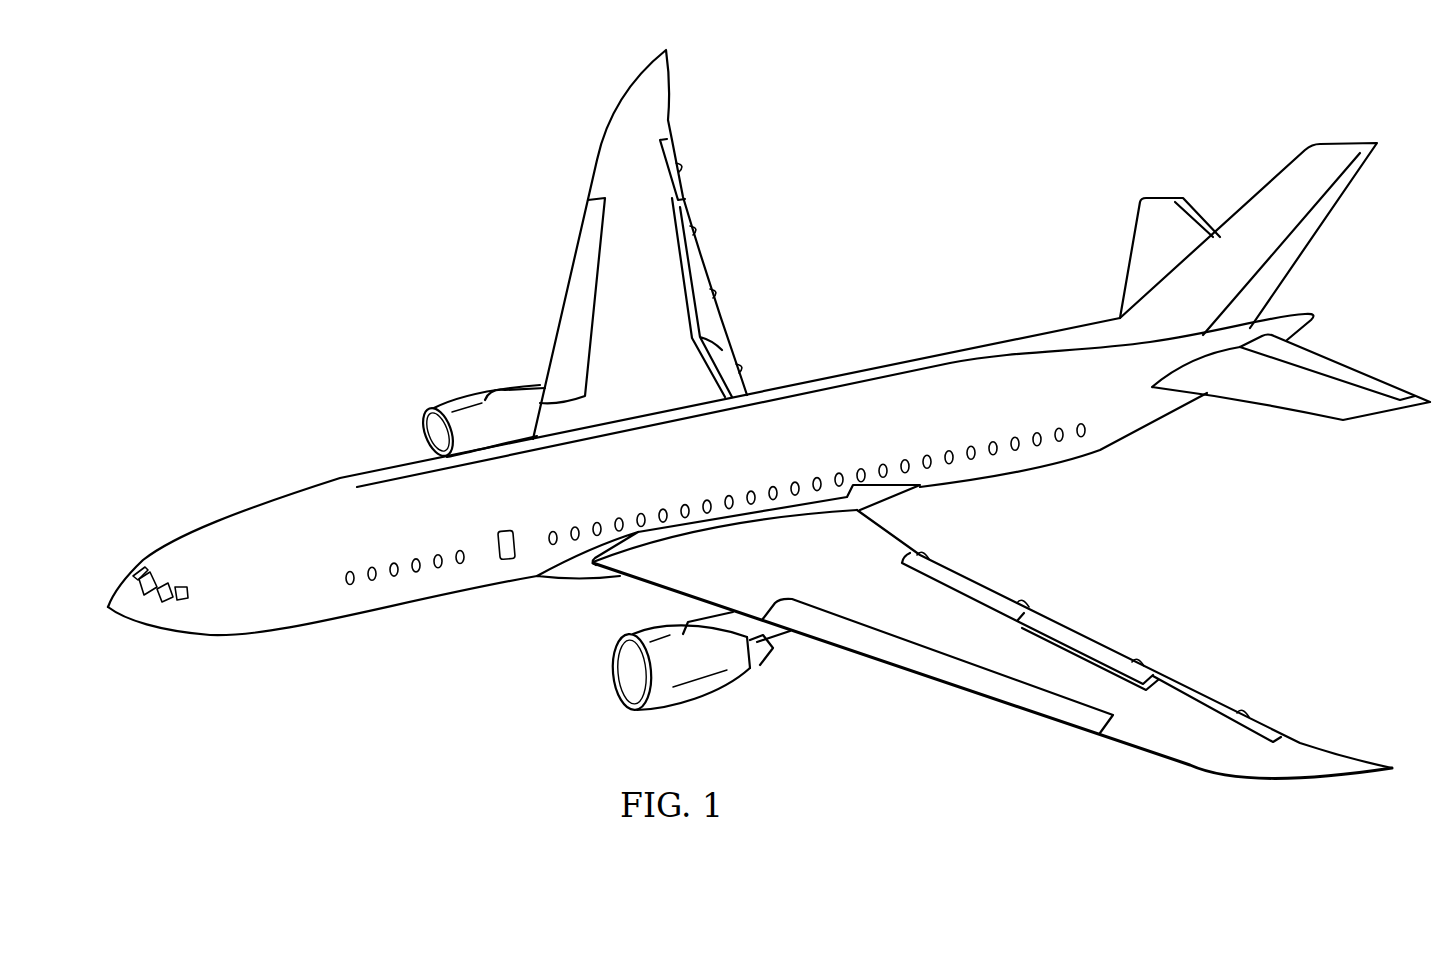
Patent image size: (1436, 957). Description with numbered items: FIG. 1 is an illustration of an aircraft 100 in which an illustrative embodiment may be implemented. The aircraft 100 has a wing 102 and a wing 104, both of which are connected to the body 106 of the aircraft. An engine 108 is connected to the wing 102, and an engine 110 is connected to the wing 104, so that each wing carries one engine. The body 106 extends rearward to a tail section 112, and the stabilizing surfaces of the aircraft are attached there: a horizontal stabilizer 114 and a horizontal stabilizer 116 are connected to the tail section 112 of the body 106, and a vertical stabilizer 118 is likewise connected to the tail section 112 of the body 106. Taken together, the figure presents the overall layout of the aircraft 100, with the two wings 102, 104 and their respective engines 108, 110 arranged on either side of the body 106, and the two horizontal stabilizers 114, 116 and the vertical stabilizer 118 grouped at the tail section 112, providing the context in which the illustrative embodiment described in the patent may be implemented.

The aircraft 100 is at (375, 195).
The wing 102 is at (657, 87).
The wing 104 is at (1240, 782).
The body 106 is at (285, 491).
The engine 108 is at (463, 384).
The engine 110 is at (700, 705).
The tail section 112 is at (1195, 455).
The horizontal stabilizer 114 is at (1128, 253).
The horizontal stabilizer 116 is at (1295, 413).
The vertical stabilizer 118 is at (1323, 228).